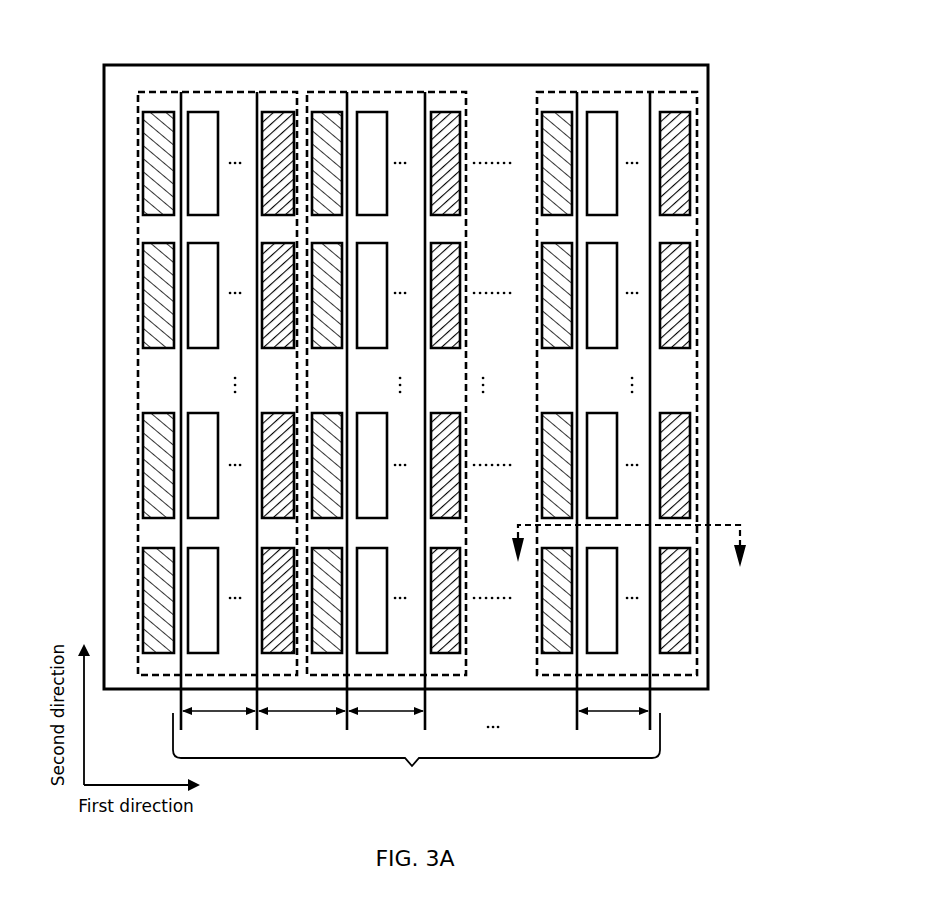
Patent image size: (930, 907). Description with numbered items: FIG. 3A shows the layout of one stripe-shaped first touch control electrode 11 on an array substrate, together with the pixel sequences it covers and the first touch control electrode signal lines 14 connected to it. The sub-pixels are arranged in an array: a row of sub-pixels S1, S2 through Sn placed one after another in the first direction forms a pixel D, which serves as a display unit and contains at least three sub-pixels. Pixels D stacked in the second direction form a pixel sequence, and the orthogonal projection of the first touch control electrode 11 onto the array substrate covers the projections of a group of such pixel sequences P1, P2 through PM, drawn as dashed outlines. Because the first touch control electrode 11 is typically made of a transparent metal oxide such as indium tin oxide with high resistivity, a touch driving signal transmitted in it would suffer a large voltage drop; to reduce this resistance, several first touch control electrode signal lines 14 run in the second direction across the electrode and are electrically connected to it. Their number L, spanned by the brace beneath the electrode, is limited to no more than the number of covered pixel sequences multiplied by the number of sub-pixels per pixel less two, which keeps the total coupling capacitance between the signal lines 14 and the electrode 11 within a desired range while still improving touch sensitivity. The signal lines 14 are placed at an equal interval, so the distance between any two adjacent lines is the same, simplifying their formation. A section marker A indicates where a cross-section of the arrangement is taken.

The first touch control electrode 11 is at (710, 72).
The first touch control electrode signal line 14 is at (653, 702).
The sub-pixel S1 is at (157, 112).
The sub-pixel S2 is at (208, 112).
The sub-pixel Sn is at (280, 112).
The pixel sequence P1 is at (138, 530).
The pixel sequence P2 is at (393, 92).
The pixel sequence PM is at (697, 663).
The pixel D is at (415, 729).
The number of first touch control electrode signal lines L is at (416, 754).
The section line A-A' A is at (633, 558).